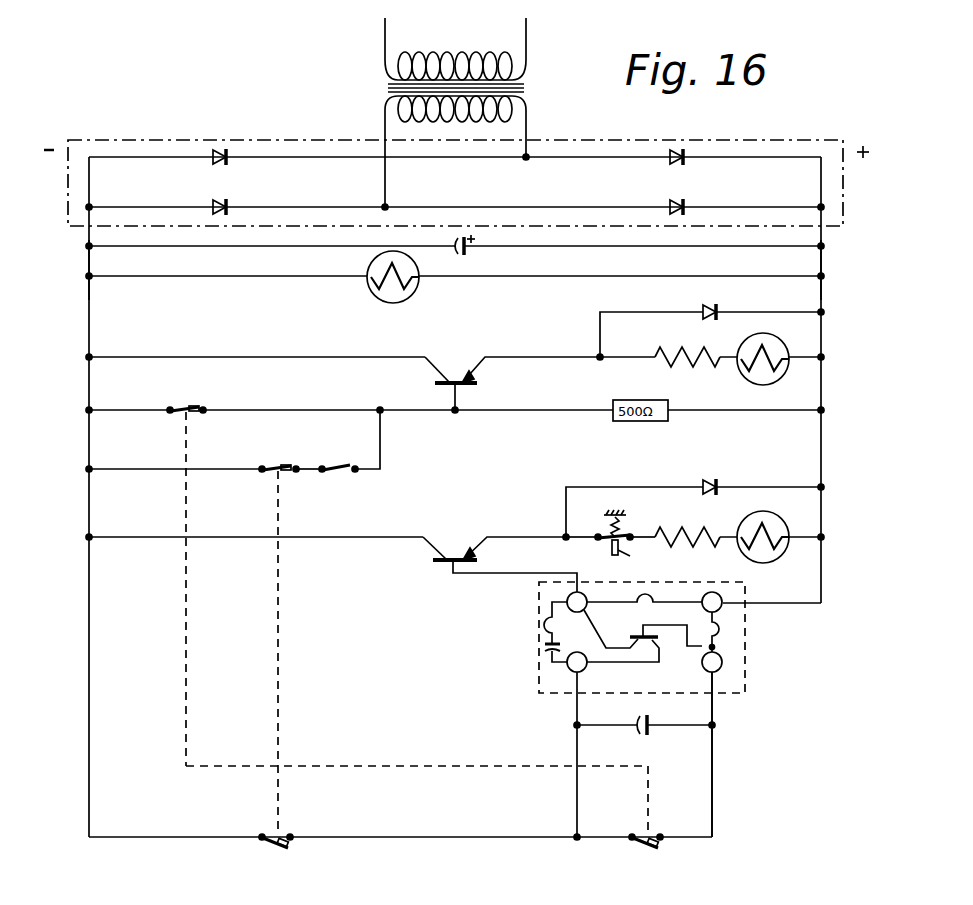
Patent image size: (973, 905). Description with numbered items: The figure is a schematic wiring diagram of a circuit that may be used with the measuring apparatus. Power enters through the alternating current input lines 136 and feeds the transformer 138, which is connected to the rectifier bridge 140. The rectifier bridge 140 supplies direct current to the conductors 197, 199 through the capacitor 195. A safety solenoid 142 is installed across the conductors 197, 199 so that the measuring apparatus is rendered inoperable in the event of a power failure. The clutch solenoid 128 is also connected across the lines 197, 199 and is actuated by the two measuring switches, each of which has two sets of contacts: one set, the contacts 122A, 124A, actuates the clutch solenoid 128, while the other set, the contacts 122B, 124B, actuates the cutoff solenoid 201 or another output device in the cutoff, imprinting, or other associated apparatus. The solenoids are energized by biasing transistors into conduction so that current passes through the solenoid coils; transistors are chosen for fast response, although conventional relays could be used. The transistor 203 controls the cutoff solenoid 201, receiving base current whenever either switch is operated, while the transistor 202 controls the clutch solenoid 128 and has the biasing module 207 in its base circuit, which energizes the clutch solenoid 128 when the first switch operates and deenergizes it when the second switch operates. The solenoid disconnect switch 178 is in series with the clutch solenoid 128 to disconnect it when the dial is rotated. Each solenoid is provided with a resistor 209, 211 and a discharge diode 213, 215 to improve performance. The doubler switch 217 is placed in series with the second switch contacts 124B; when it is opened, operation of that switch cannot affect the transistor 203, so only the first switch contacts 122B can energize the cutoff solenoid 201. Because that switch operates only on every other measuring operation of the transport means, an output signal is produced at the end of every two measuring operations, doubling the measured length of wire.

The alternating current input lines 136 is at (526, 26).
The transformer 138 is at (532, 88).
The rectifier bridge 140 is at (470, 194).
The safety solenoid 142 is at (372, 293).
The capacitor 195 is at (468, 255).
The conductor 197 is at (822, 267).
The conductor 199 is at (88, 268).
The transistor 203 is at (450, 379).
The resistor 211 is at (707, 372).
The cutoff solenoid 201 is at (789, 371).
The discharge diode 215 is at (717, 307).
The switch contacts 122B is at (191, 394).
The switch contacts 124B is at (283, 453).
The doubler switch 217 is at (343, 476).
The transistor 202 is at (448, 556).
The discharge diode 213 is at (716, 483).
The solenoid disconnect switch 178 is at (620, 535).
The resistor 209 is at (712, 548).
The clutch solenoid 128 is at (791, 506).
The biasing module 207 is at (786, 641).
The switch contacts 124A is at (268, 830).
The switch contacts 122A is at (664, 815).